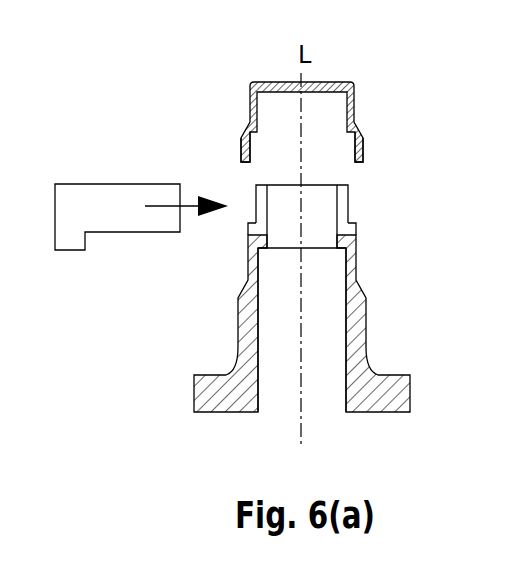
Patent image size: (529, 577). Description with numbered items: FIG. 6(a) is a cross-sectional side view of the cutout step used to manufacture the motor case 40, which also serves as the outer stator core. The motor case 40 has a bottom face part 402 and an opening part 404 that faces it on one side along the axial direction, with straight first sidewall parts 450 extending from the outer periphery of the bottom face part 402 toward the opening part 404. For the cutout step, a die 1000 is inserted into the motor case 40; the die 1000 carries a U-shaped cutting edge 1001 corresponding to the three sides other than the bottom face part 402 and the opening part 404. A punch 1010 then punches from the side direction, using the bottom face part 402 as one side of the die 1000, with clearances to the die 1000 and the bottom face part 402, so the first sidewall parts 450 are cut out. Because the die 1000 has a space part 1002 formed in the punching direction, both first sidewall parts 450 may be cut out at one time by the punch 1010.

The motor case 40 is at (293, 85).
The bottom face part 402 is at (330, 80).
The first sidewall parts 450 is at (247, 126).
The opening part 404 is at (270, 166).
The die 1000 is at (362, 312).
The cutting edge 1001 is at (350, 212).
The space part 1002 is at (284, 219).
The punch 1010 is at (130, 220).